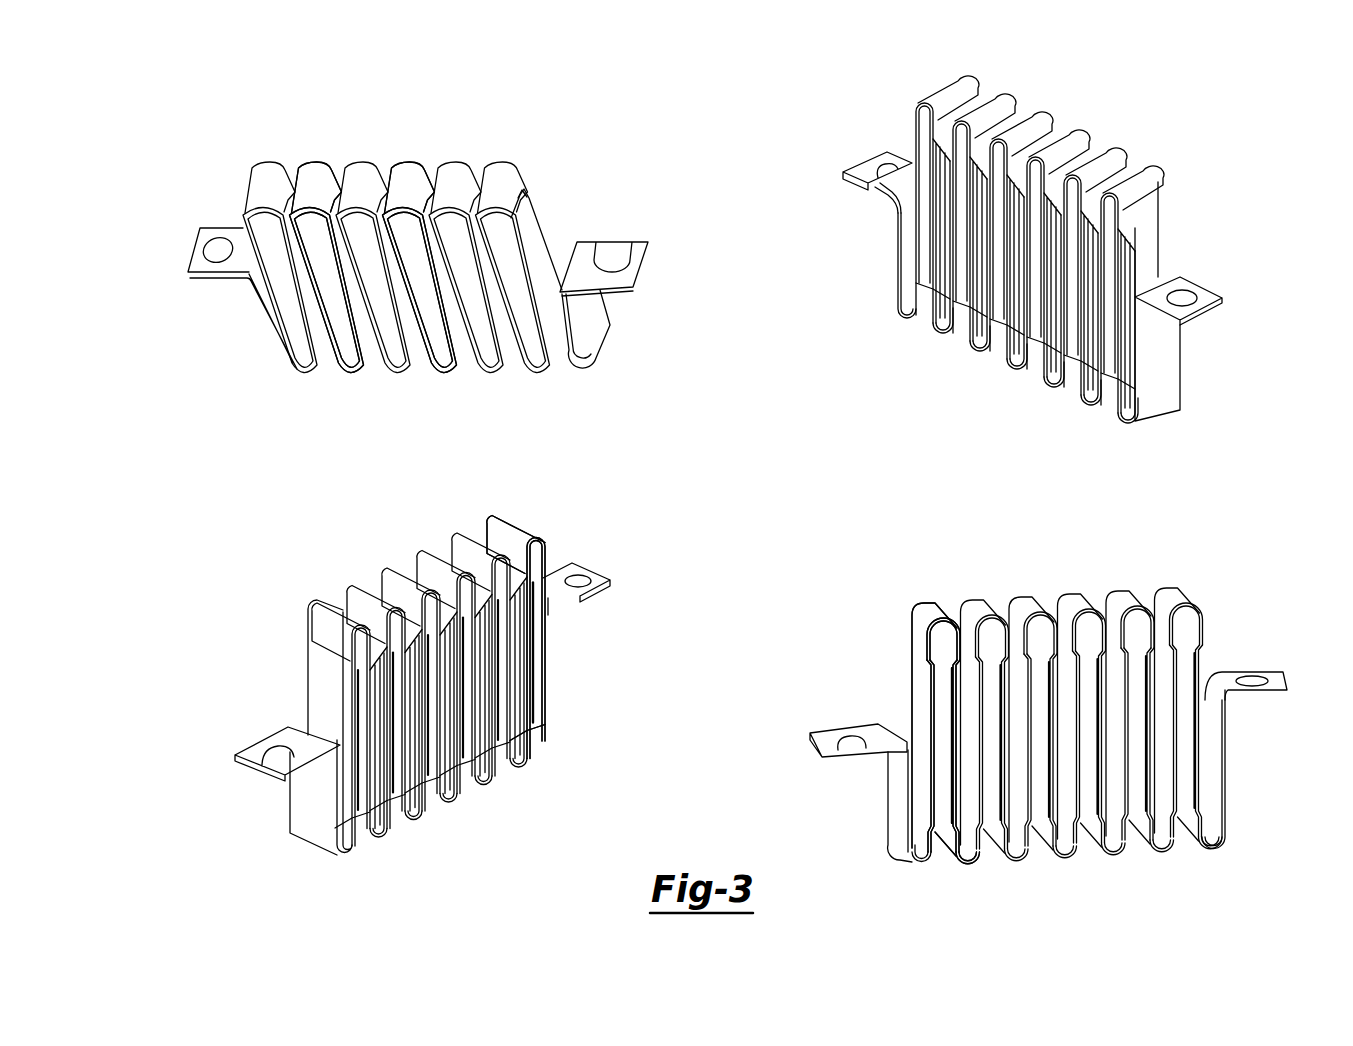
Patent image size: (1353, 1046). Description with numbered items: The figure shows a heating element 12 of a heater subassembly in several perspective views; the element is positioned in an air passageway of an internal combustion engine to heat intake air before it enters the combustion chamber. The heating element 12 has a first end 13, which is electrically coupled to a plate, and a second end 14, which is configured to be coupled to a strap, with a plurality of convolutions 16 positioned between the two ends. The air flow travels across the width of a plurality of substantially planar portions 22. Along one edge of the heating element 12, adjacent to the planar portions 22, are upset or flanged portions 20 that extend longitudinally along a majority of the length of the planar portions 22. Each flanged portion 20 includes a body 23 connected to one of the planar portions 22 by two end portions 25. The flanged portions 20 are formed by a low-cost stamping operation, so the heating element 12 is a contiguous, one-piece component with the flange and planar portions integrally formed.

The heating element 12 is at (728, 500).
The first end 13 is at (205, 270).
The second end 14 is at (610, 282).
The convolutions 16 is at (415, 175).
The flanged portion 20 is at (540, 213).
The planar portion 22 is at (353, 320).
The body 23 is at (555, 243).
The end portions 25 is at (518, 190).